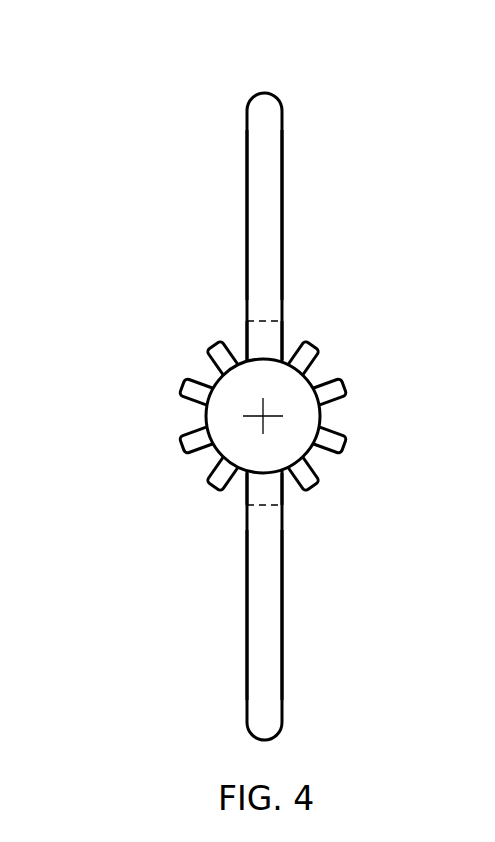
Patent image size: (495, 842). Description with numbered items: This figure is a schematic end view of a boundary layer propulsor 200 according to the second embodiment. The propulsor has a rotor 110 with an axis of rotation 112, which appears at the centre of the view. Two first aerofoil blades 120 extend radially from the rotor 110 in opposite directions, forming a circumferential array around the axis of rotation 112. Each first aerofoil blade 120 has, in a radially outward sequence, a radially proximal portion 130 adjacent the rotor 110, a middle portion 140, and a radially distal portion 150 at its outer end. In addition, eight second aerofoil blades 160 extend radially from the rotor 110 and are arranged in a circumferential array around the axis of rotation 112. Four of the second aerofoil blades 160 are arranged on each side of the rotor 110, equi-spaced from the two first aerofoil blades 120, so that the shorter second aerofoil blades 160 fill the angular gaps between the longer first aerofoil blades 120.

The boundary layer propulsor 200 is at (386, 97).
The rotor 110 is at (278, 448).
The axis of rotation 112 is at (256, 416).
The first aerofoil blade 120 is at (282, 132).
The radially proximal portion 130 is at (283, 340).
The middle portion 140 is at (283, 320).
The radially distal portion 150 is at (282, 200).
The second aerofoil blade 160 is at (314, 347).